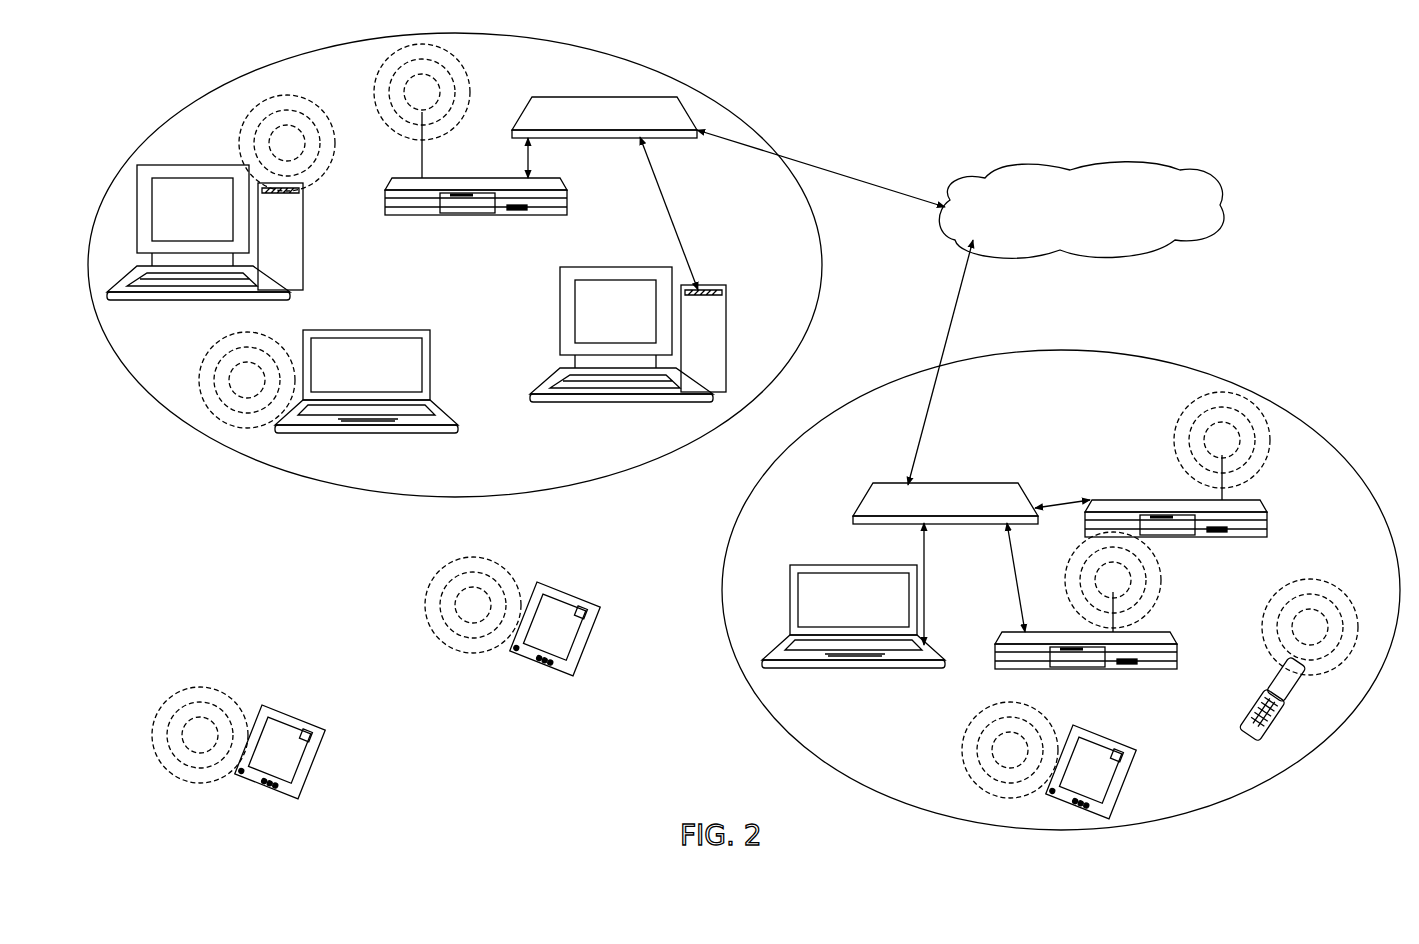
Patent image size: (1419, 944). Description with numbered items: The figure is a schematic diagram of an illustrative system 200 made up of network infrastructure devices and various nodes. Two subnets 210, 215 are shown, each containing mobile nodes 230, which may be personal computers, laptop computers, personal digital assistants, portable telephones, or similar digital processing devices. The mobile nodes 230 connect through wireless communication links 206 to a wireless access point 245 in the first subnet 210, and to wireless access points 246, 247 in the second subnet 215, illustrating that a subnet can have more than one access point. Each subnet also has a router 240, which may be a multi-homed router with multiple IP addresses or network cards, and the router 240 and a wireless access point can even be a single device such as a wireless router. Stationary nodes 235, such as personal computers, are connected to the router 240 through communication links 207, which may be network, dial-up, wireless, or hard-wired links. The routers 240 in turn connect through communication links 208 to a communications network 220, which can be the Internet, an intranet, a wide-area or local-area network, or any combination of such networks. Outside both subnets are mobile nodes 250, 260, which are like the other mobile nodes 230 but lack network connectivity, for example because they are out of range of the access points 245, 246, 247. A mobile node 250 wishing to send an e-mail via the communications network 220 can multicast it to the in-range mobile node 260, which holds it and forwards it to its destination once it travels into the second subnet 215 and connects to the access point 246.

The system 200 is at (322, 848).
The wireless communication links 206 is at (376, 100).
The communication links 207 is at (675, 232).
The communication links 208 is at (822, 165).
The subnet 210 is at (258, 462).
The subnet 215 is at (750, 710).
The communications network 220 is at (1178, 175).
The mobile nodes 230 is at (244, 163).
The stationary nodes 235 is at (615, 266).
The router 240 is at (612, 97).
The wireless access point 245 is at (515, 178).
The wireless access point 246 is at (1127, 665).
The wireless access point 247 is at (1108, 500).
The mobile node 250 is at (557, 590).
The mobile node 260 is at (284, 712).